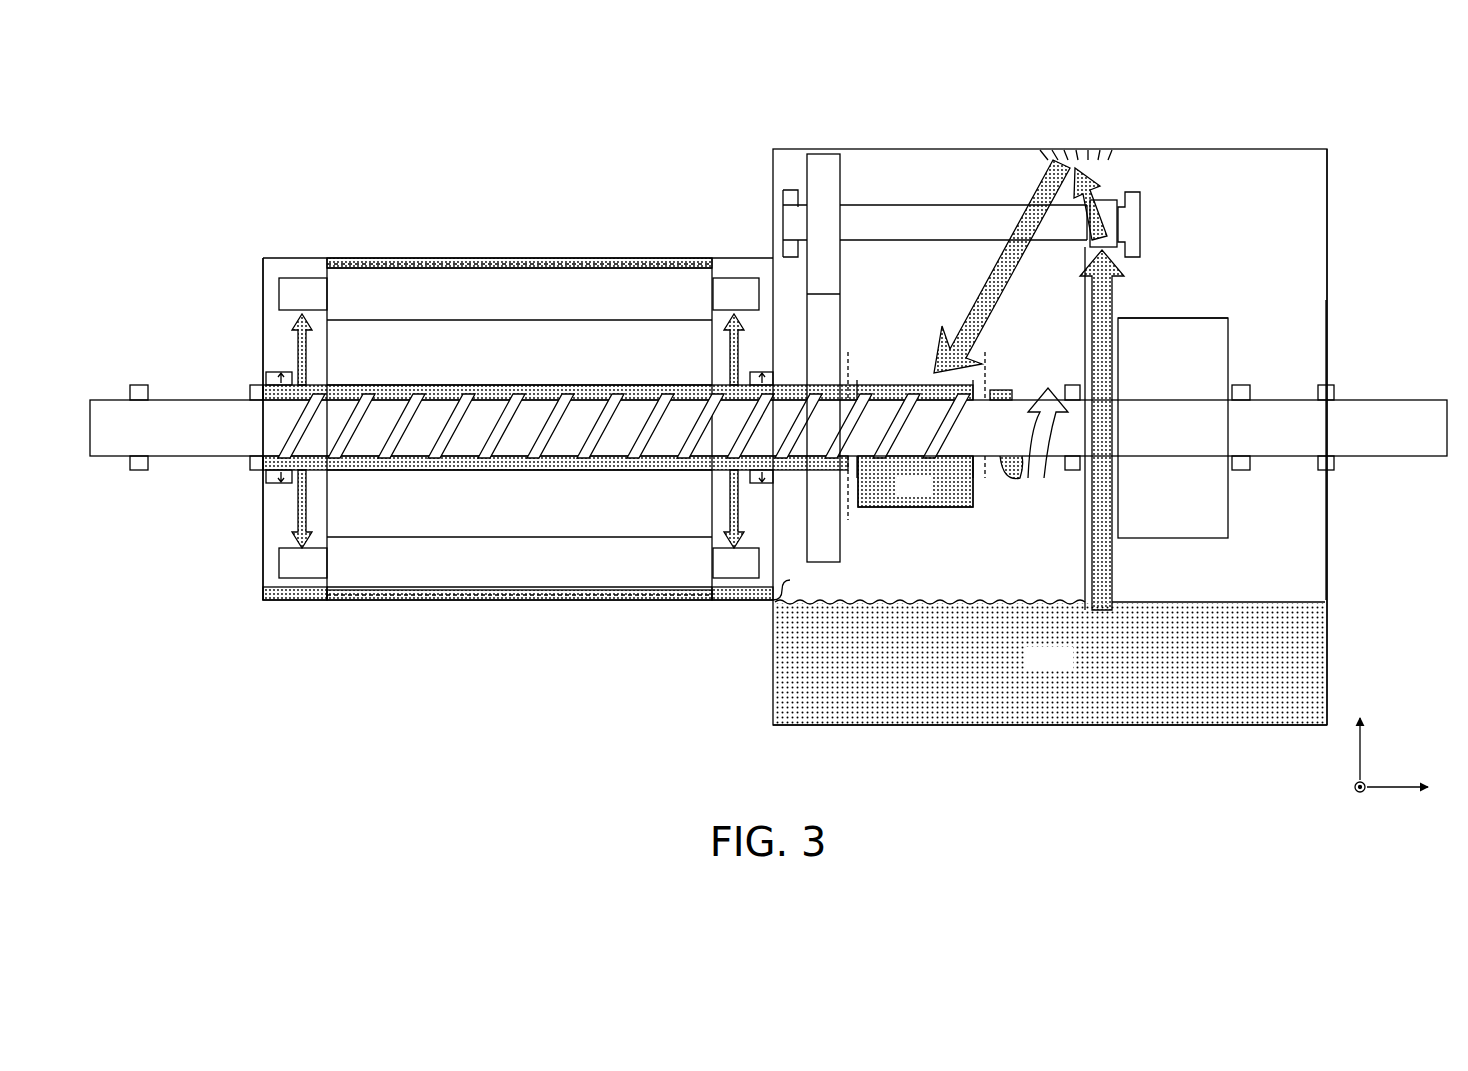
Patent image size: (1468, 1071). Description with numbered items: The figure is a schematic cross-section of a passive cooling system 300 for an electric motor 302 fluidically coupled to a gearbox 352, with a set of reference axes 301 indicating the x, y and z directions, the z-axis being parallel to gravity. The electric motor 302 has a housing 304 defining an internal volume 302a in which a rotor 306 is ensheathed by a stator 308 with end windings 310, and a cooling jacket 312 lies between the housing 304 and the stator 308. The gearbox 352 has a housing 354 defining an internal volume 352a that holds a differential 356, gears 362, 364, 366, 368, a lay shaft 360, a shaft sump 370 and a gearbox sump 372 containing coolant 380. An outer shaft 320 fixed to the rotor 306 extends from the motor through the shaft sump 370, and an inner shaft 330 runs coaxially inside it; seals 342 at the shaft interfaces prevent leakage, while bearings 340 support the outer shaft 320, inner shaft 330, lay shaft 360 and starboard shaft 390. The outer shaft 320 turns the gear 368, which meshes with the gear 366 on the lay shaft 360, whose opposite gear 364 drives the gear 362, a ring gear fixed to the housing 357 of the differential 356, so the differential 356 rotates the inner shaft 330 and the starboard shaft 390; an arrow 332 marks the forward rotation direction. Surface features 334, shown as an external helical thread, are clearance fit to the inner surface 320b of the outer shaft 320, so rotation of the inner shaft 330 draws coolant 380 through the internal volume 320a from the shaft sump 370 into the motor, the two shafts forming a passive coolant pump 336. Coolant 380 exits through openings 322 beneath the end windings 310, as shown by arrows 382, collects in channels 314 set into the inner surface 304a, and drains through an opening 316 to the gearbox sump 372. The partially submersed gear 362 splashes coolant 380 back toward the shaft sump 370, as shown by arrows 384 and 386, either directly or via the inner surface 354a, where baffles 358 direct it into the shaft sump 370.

The passive cooling system 300 is at (306, 70).
The reference axes 301 is at (1405, 740).
The electric motor 302 is at (256, 252).
The internal volume of the electric motor 302a is at (728, 265).
The housing of the electric motor 304 is at (262, 295).
The inner surface of the electric motor housing 304a is at (268, 262).
The rotor 306 is at (519, 427).
The stator 308 is at (519, 427).
The end windings 310 is at (519, 428).
The cooling jacket 312 is at (536, 262).
The channels 314 is at (294, 604).
The opening 316 is at (806, 582).
The outer shaft 320 is at (626, 470).
The internal volume of the outer shaft 320a is at (446, 394).
The inner surface of the outer shaft 320b is at (466, 468).
The openings 322 is at (318, 378).
The inner shaft 330 is at (1023, 400).
The arrow 332 is at (1014, 478).
The surface features 334 is at (622, 392).
The passive coolant pump 336 is at (892, 360).
The bearings 340 is at (136, 385).
The seals 342 is at (250, 390).
The gearbox 352 is at (1338, 138).
The internal volume of the gearbox 352a is at (1241, 222).
The housing of the gearbox 354 is at (1328, 223).
The inner surface of the gearbox housing 354a is at (1326, 280).
The differential 356 is at (1173, 428).
The housing of the differential 357 is at (1185, 318).
The baffles 358 is at (1036, 158).
The lay shaft 360 is at (956, 205).
The gear 362 is at (1113, 565).
The gear 364 is at (1107, 200).
The gear 366 is at (842, 194).
The gear 368 is at (808, 310).
The shaft sump 370 is at (918, 508).
The gearbox sump 372 is at (1046, 730).
The coolant 380 is at (1050, 590).
The arrows 382 is at (292, 372).
The arrows 384 is at (1093, 283).
The arrow 386 is at (978, 290).
The starboard shaft 390 is at (1420, 400).